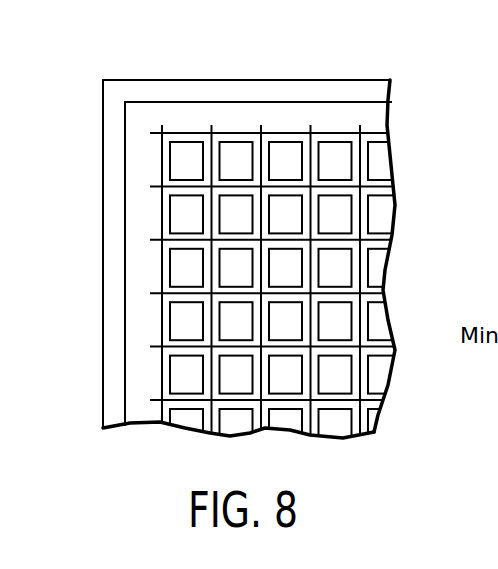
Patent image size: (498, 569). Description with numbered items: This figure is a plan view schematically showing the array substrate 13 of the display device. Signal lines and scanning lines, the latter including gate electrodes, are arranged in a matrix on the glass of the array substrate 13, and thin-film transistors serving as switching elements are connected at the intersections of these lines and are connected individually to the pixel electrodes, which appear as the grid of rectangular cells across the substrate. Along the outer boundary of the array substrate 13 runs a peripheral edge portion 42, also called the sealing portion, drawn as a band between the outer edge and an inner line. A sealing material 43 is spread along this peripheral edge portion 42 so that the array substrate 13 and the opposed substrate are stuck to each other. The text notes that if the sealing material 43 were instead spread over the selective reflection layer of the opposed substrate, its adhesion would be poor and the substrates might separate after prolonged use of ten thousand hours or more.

The array substrate 13 is at (412, 148).
The peripheral edge portion 42 is at (253, 80).
The sealing material 43 is at (327, 92).